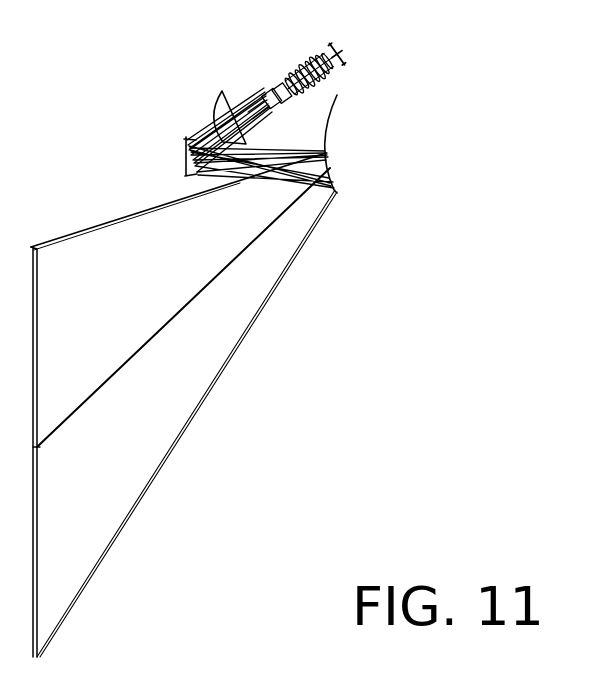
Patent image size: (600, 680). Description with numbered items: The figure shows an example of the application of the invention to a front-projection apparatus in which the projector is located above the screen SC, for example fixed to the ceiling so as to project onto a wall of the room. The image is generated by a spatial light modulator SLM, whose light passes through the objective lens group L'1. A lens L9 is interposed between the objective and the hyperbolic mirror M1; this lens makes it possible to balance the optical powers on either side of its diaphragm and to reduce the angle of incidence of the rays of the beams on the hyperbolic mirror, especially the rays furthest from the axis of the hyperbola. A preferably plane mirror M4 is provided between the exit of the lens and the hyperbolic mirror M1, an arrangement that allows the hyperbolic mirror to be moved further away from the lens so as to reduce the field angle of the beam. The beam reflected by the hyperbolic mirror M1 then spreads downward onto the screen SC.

The screen SC is at (184, 405).
The hyperbolic mirror M1 is at (326, 138).
The plane mirror M4 is at (186, 150).
The lens L9 is at (217, 110).
The objective lens group L'1 is at (291, 74).
The spatial light modulator SLM is at (349, 62).